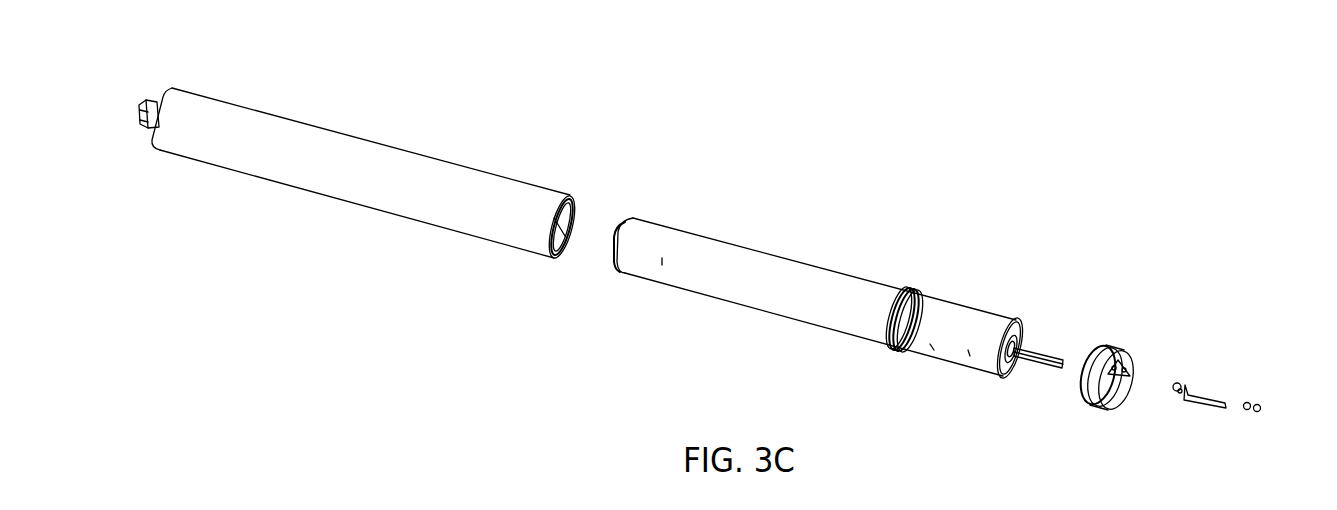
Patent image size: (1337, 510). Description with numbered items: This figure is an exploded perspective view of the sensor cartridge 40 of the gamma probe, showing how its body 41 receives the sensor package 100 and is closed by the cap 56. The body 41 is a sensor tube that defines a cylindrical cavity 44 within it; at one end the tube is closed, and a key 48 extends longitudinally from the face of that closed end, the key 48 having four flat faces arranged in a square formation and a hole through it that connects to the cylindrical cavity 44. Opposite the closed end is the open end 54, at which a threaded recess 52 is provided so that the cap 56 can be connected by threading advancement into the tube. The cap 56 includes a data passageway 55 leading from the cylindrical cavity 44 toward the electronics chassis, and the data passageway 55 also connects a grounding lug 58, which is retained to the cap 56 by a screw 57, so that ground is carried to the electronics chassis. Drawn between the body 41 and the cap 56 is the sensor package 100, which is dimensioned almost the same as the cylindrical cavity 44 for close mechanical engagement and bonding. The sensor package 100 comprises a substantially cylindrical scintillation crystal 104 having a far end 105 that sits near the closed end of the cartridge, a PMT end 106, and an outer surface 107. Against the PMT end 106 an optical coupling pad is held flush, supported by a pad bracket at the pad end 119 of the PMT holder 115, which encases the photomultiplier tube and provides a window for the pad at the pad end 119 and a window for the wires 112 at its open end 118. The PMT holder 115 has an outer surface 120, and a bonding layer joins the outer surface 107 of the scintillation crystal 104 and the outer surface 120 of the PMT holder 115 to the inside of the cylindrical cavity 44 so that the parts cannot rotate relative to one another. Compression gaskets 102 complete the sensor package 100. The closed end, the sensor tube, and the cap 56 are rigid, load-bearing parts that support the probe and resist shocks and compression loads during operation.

The sensor cartridge 40 is at (374, 201).
The body 41 is at (301, 121).
The key 48 is at (146, 100).
The open end 54 is at (570, 196).
The threaded recess 52 is at (578, 214).
The cylindrical cavity 44 is at (560, 258).
The sensor package 100 is at (851, 270).
The scintillation crystal 104 is at (810, 262).
The far end 105 is at (633, 218).
The outer surface 107 is at (676, 266).
The PMT end 106 is at (892, 292).
The pad end 119 is at (918, 296).
The PMT holder 115 is at (934, 346).
The outer surface 120 is at (974, 350).
The open end 118 is at (1012, 322).
The compression gaskets 102 is at (1022, 332).
The wires 112 is at (1050, 360).
The cap 56 is at (1131, 371).
The data passageway 55 is at (1130, 372).
The grounding lug 58 is at (1190, 384).
The screw 57 is at (1254, 414).